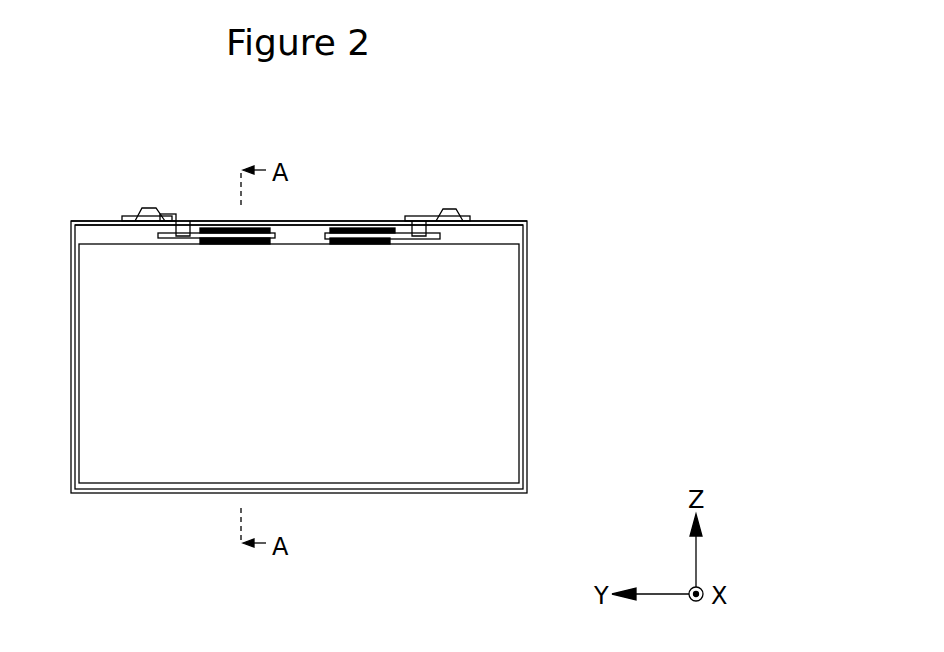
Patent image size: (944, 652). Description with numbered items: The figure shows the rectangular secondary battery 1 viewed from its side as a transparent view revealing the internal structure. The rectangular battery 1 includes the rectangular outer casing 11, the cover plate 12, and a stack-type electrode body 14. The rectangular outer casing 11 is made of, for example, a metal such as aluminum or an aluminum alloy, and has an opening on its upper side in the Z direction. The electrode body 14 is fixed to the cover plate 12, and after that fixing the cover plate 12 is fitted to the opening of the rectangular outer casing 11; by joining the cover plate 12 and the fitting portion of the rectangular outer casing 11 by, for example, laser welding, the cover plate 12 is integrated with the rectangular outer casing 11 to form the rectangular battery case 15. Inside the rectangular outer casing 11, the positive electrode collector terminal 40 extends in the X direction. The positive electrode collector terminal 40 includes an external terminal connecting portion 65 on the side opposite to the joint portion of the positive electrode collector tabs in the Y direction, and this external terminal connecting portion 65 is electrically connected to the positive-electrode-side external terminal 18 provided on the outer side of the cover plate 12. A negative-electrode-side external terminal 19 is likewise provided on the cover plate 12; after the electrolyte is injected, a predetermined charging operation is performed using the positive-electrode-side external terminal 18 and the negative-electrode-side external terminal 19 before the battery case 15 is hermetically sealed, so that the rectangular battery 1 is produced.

The rectangular secondary battery 1 is at (350, 158).
The rectangular outer casing 11 is at (527, 254).
The cover plate 12 is at (500, 217).
The stack-type electrode body 14 is at (162, 430).
The rectangular battery case 15 is at (365, 218).
The positive-electrode-side external terminal 18 is at (143, 208).
The negative-electrode-side external terminal 19 is at (448, 208).
The positive electrode collector terminal 40 is at (190, 216).
The external terminal connecting portion 65 is at (162, 216).